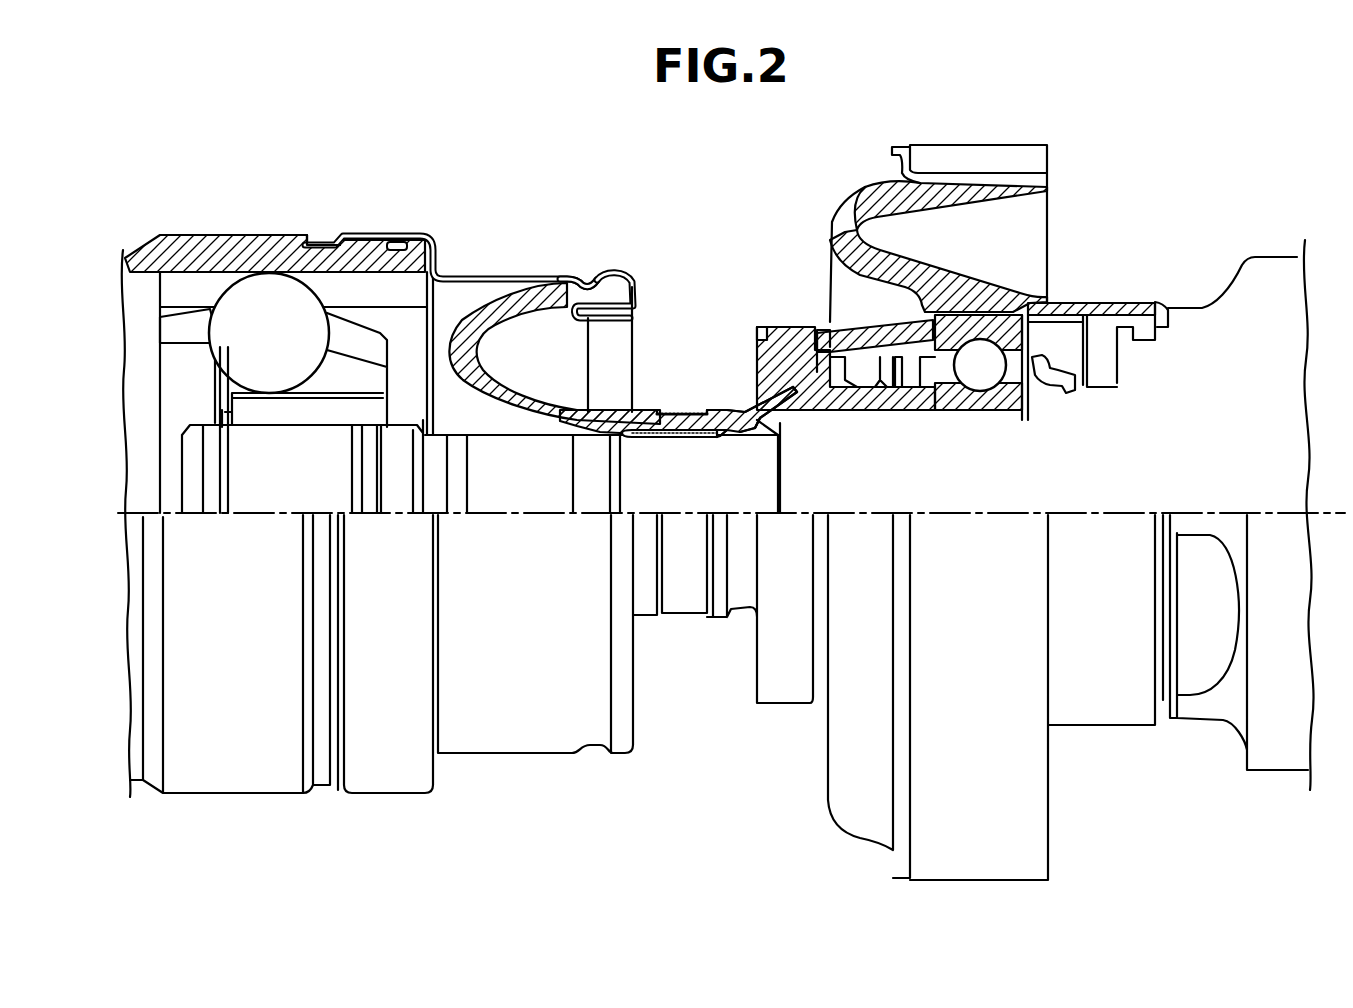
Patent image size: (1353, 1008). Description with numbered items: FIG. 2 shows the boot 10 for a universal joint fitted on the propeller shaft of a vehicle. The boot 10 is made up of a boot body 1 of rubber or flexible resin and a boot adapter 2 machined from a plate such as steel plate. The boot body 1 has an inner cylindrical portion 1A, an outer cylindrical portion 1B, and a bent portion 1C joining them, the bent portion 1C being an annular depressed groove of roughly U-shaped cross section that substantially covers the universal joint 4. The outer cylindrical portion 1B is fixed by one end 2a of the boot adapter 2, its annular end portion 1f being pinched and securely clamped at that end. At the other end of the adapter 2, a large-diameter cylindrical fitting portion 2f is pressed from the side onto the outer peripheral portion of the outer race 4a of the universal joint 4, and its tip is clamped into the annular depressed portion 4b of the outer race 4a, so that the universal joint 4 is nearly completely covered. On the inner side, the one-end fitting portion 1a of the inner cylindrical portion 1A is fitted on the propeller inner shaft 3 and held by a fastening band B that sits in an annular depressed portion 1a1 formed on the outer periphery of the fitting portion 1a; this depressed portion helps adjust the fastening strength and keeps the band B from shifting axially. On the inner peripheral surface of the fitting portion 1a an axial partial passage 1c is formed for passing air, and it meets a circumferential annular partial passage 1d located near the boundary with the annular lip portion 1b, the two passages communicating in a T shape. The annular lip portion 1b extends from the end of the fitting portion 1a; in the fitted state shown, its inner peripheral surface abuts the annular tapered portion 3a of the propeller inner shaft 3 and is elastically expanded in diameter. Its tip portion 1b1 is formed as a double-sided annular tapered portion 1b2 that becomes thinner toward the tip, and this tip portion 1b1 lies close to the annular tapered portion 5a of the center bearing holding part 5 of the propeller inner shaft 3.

The boot body 1 is at (648, 339).
The inner cylindrical portion 1A is at (640, 405).
The outer cylindrical portion 1B is at (607, 264).
The bent portion 1C is at (488, 377).
The one-end fitting portion 1a is at (688, 410).
The annular depressed portion 1a1 is at (711, 410).
The annular lip portion 1b is at (750, 410).
The tip portion 1b1 is at (777, 410).
The annular tapered portion 1b2 is at (781, 424).
The partial passage 1c is at (672, 440).
The annular partial passage 1d is at (724, 440).
The annular end portion 1f is at (630, 281).
The boot adapter 2 is at (485, 256).
The one end 2a is at (590, 276).
The fitting portion 2f is at (376, 237).
The propeller inner shaft 3 is at (703, 501).
The annular tapered portion 3a is at (760, 434).
The universal joint 4 is at (262, 330).
The outer race 4a is at (286, 262).
The annular depressed portion 4b is at (313, 243).
The center bearing holding part 5 is at (777, 410).
The annular tapered portion 5a is at (784, 395).
The boot for a universal joint 10 is at (580, 182).
The fastening band B is at (668, 410).